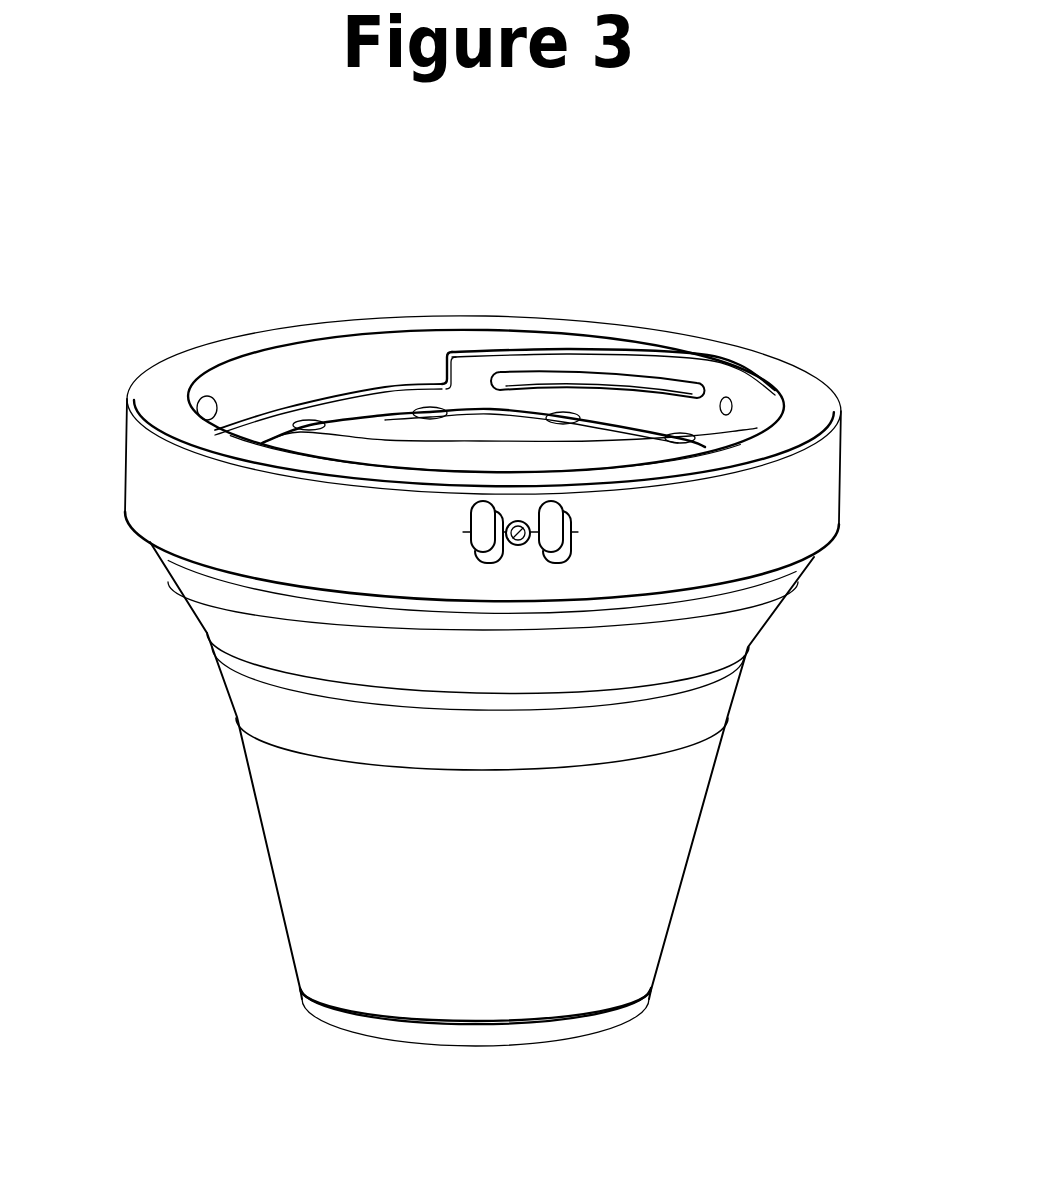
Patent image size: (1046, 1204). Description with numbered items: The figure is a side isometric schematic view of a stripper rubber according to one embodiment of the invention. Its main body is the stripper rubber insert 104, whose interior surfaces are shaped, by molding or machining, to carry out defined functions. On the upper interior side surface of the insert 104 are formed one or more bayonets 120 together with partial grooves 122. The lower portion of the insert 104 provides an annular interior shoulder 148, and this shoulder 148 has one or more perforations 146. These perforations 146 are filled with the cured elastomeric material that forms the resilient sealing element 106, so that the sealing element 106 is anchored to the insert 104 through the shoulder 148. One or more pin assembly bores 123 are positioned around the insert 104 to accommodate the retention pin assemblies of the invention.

The stripper rubber insert 104 is at (812, 483).
The resilient sealing element 106 is at (647, 850).
The bayonet 120 is at (645, 372).
The partial groove 122 is at (566, 377).
The pin assembly bore 123 is at (475, 560).
The perforation 146 is at (426, 410).
The annular interior shoulder 148 is at (497, 408).